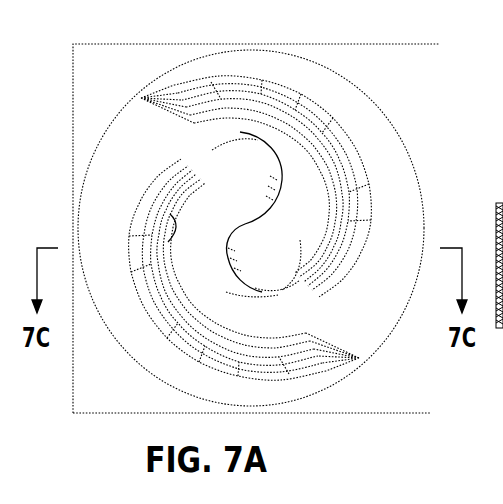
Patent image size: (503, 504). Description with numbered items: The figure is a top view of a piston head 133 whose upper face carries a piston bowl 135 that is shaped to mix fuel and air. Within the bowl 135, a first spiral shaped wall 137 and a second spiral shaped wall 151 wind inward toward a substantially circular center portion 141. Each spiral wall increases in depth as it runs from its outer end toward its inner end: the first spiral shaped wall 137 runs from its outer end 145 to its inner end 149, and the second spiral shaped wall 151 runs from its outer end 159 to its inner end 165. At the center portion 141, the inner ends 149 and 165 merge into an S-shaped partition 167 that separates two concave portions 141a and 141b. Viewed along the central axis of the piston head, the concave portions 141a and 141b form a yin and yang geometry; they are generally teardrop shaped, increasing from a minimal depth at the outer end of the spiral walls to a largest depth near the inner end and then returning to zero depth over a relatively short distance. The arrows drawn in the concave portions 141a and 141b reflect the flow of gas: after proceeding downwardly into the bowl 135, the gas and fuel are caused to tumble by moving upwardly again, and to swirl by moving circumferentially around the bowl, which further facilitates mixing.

The valve housing 133 is at (357, 112).
The piston bowl 135 is at (196, 205).
The first spiral shaped wall 137 is at (337, 187).
The center portion 141 is at (247, 300).
The concave portion 141a is at (306, 246).
The concave portion 141b is at (222, 246).
The outer end 145 is at (160, 100).
The inner end 149 is at (340, 237).
The second spiral shaped wall 151 is at (226, 296).
The outer end 159 is at (338, 360).
The inner end 165 is at (173, 220).
The S-shaped partition 167 is at (257, 218).